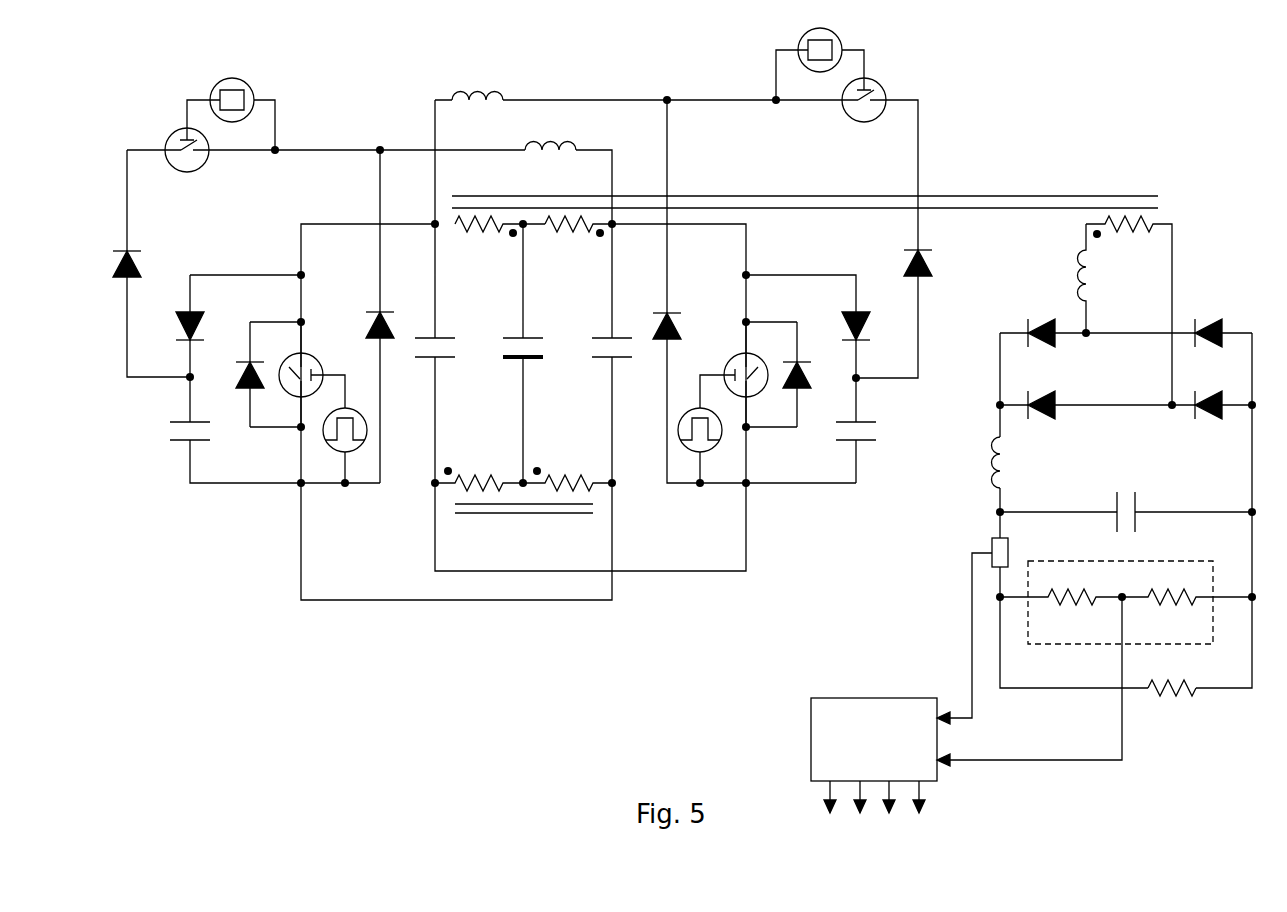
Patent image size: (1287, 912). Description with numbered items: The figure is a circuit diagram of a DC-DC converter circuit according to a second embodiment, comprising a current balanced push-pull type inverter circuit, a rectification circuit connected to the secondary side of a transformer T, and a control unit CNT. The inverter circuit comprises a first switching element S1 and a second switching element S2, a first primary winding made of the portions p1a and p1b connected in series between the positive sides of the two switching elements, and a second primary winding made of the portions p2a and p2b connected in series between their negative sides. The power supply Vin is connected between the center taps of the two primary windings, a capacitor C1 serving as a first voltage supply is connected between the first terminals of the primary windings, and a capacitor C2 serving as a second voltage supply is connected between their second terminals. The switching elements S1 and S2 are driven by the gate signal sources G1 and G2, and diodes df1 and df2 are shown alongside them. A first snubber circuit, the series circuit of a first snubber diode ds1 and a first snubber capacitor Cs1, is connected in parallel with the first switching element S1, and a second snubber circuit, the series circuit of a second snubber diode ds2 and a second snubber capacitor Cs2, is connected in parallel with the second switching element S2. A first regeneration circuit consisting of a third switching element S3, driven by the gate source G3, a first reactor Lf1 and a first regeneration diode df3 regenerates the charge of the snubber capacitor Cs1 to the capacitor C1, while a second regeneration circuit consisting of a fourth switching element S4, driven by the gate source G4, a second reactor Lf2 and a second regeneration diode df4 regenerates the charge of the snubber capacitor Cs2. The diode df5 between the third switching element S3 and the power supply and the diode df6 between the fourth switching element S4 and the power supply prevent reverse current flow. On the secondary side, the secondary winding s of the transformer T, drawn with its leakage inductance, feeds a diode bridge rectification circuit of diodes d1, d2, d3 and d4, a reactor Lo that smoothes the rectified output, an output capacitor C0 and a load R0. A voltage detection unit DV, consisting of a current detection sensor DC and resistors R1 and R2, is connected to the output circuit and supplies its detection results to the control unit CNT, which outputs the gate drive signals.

The third switching element S3 is at (175, 145).
The gate drive signal source for third switching element G3 is at (234, 107).
The gate drive signal source for fourth switching element G4 is at (823, 56).
The fourth switching element S4 is at (878, 99).
The second reactor Lf2 is at (477, 79).
The first reactor Lf1 is at (550, 133).
The transformer T is at (815, 351).
The first regeneration diode df3 is at (110, 264).
The first snubber diode ds1 is at (173, 326).
The first snubber capacitor Cs1 is at (172, 433).
The diode df1 is at (234, 375).
The first switching element S1 is at (309, 374).
The gate drive signal source for first switching element G1 is at (341, 445).
The diode df5 is at (364, 325).
The first primary winding portion p1b is at (500, 241).
The first primary winding portion p1a is at (578, 241).
The second primary winding portion p2a is at (479, 468).
The second primary winding portion p2b is at (567, 468).
The capacitor C2 is at (450, 347).
The power supply Vin is at (531, 364).
The capacitor C1 is at (597, 347).
The diode df6 is at (684, 326).
The second switching element S2 is at (739, 374).
The gate drive signal source for second switching element G2 is at (709, 445).
The diode df2 is at (814, 375).
The second snubber diode ds2 is at (876, 326).
The second snubber capacitor Cs2 is at (876, 433).
The second regeneration diode df4 is at (937, 263).
The secondary winding s is at (1129, 310).
The rectifier diode d1 is at (1043, 317).
The rectifier diode d2 is at (1169, 317).
The rectifier diode d3 is at (1086, 392).
The rectifier diode d4 is at (1212, 392).
The reactor Lo is at (978, 462).
The output capacitor C0 is at (1125, 498).
The current detection sensor DC is at (987, 626).
The voltage detection unit DV is at (1178, 561).
The resistor R1 is at (1061, 613).
The resistor R2 is at (1187, 614).
The load R0 is at (1172, 702).
The control unit CNT is at (966, 721).